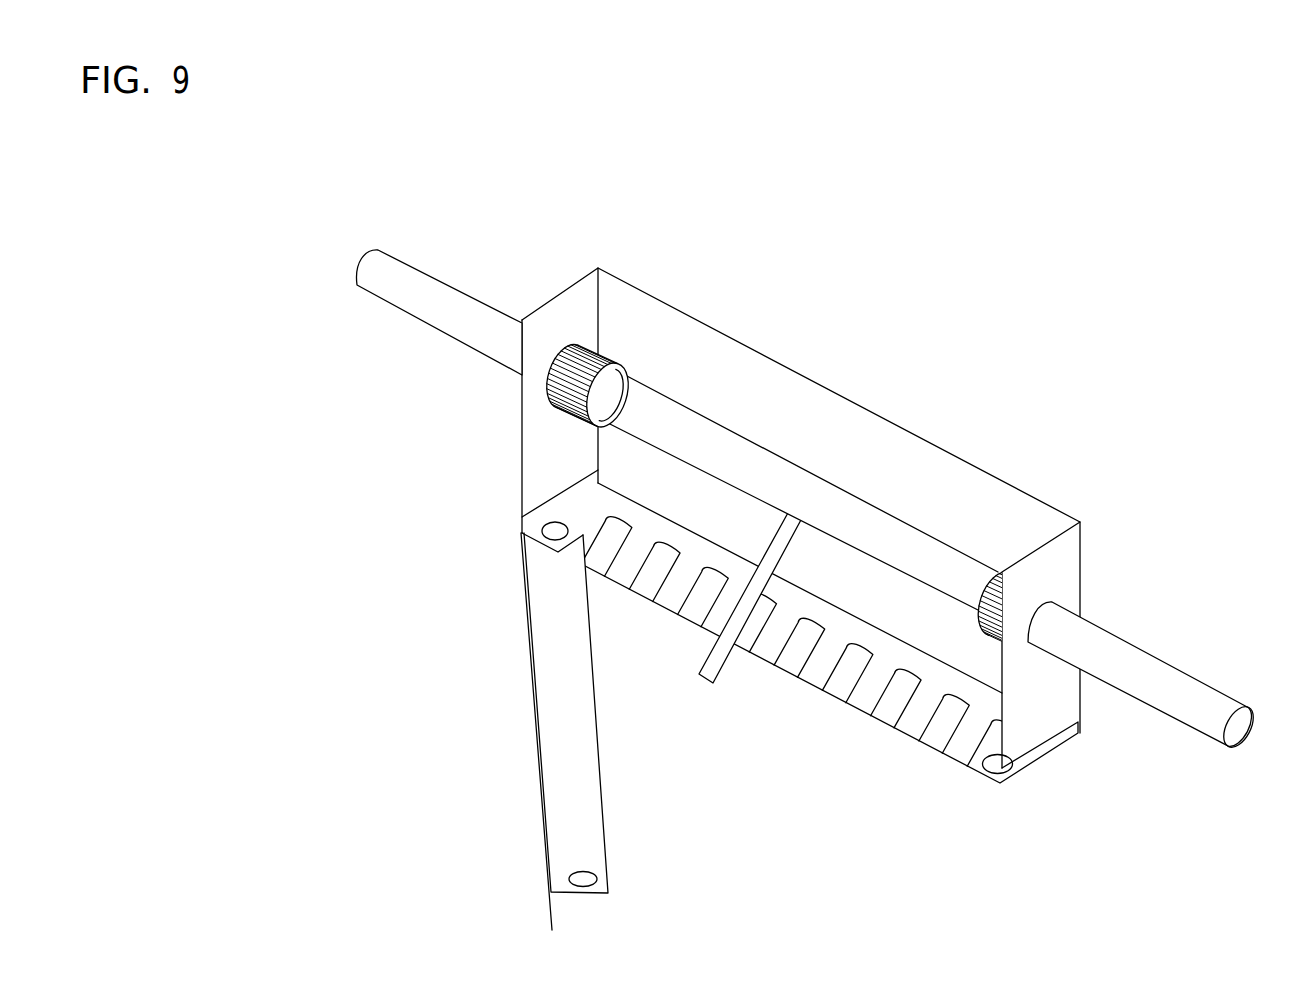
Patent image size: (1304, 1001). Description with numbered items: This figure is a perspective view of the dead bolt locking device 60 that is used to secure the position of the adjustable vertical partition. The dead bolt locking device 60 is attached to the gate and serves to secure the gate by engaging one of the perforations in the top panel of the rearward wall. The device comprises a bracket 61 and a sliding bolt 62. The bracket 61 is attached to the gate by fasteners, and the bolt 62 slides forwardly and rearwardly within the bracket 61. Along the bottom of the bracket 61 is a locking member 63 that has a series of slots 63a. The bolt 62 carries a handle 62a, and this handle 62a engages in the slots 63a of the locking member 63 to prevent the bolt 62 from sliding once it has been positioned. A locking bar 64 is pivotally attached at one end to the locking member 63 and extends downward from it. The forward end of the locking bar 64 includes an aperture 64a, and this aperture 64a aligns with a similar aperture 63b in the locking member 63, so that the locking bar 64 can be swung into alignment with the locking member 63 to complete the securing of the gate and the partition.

The dead bolt locking device 60 is at (925, 323).
The bracket 61 is at (793, 367).
The sliding bolt 62 is at (1132, 665).
The handle 62a is at (710, 682).
The locking member 63 is at (832, 688).
The slots 63a is at (772, 658).
The aperture 63b is at (995, 768).
The locking bar 64 is at (555, 722).
The aperture 64a is at (592, 882).